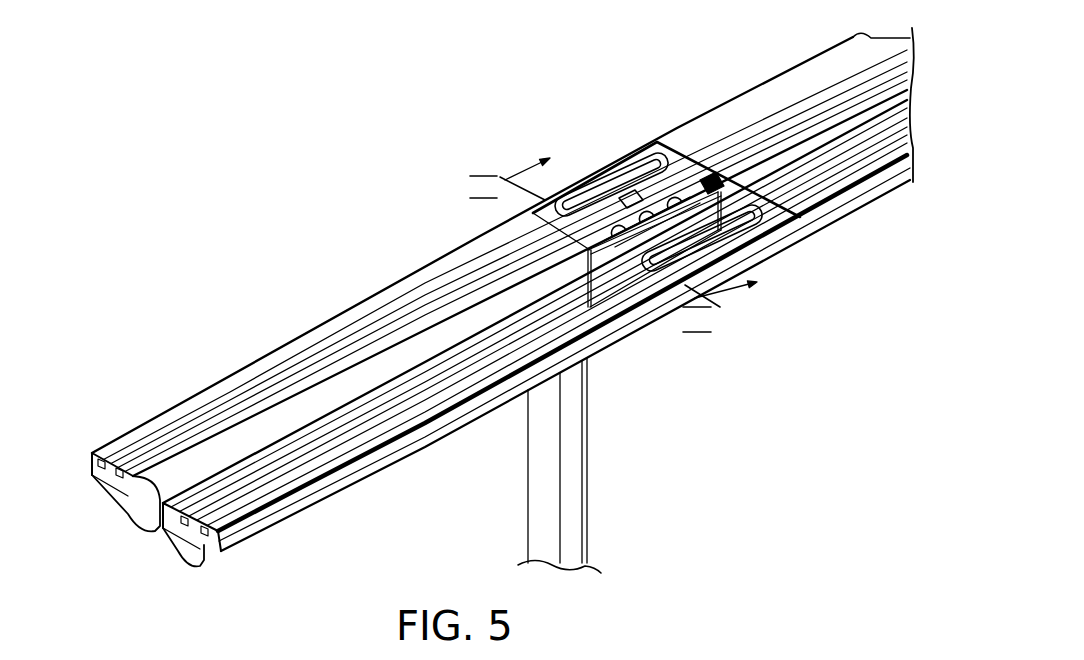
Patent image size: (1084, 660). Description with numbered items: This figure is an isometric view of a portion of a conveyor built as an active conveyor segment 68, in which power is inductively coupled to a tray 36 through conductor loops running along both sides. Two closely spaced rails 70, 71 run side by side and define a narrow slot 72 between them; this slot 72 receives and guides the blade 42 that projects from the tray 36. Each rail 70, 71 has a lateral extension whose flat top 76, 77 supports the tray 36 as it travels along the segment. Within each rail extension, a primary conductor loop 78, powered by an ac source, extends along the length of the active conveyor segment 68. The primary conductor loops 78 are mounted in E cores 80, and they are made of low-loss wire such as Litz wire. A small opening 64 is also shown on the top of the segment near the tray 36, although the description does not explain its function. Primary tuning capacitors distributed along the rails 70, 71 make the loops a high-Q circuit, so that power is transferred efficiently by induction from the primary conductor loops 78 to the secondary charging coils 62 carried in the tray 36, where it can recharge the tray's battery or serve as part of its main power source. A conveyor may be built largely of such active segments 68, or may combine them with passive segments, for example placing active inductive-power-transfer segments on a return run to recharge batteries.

The tray 36 is at (651, 147).
The blade 42 is at (596, 303).
The charging coils 62 is at (762, 226).
The fastener opening 64 is at (631, 196).
The active conveyor segment 68 is at (311, 255).
The rail 70 is at (191, 556).
The rail 71 is at (145, 515).
The slot 72 is at (244, 435).
The flat top 76 is at (258, 500).
The flat top 77 is at (190, 423).
The primary conductor loops 78 is at (195, 546).
The E cores 80 is at (218, 541).